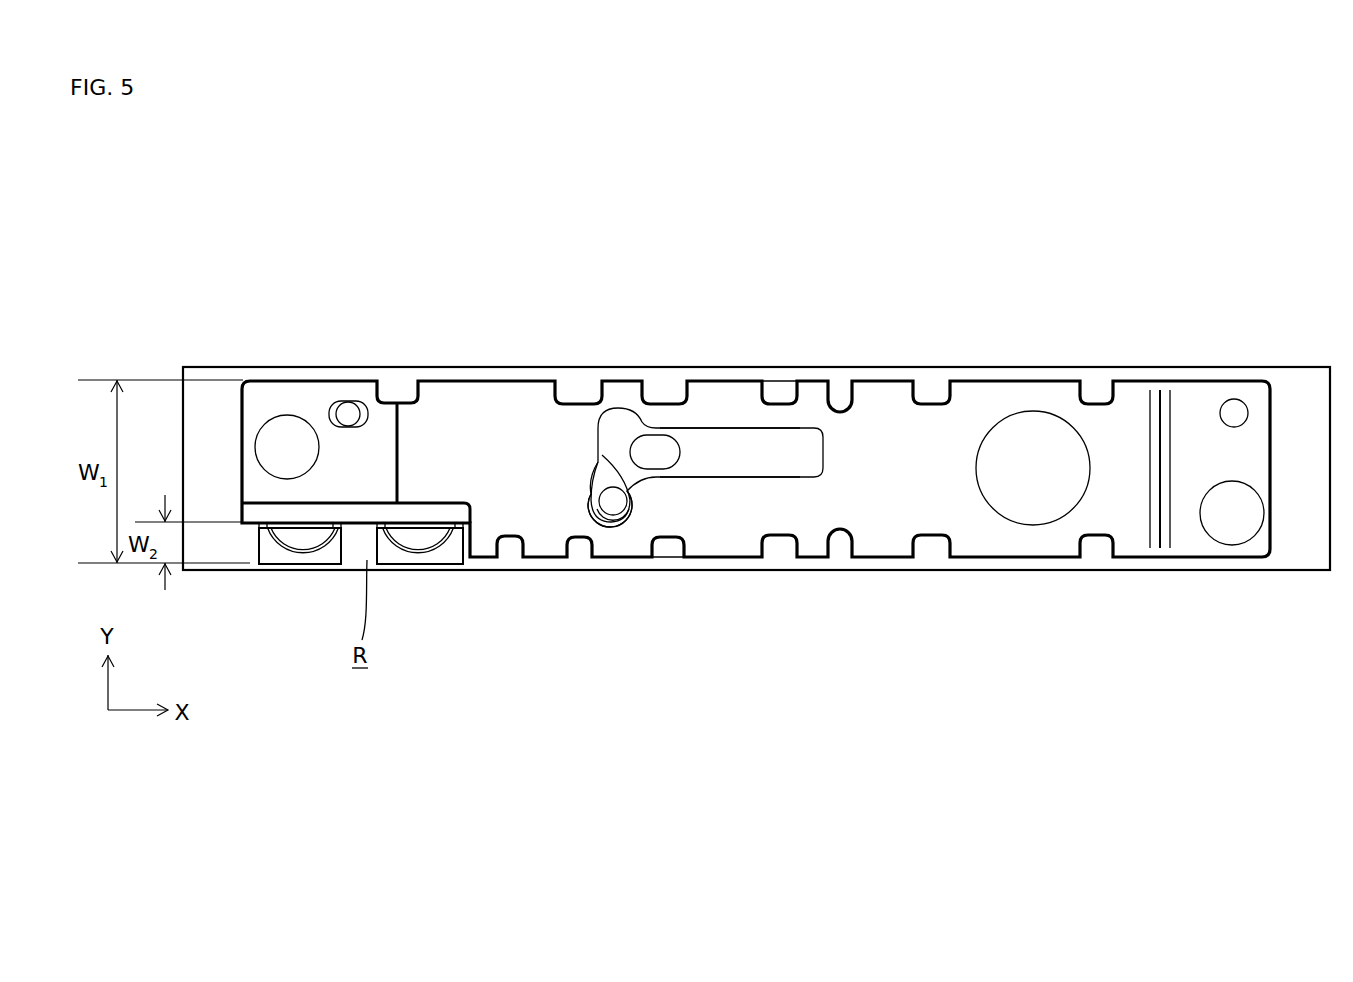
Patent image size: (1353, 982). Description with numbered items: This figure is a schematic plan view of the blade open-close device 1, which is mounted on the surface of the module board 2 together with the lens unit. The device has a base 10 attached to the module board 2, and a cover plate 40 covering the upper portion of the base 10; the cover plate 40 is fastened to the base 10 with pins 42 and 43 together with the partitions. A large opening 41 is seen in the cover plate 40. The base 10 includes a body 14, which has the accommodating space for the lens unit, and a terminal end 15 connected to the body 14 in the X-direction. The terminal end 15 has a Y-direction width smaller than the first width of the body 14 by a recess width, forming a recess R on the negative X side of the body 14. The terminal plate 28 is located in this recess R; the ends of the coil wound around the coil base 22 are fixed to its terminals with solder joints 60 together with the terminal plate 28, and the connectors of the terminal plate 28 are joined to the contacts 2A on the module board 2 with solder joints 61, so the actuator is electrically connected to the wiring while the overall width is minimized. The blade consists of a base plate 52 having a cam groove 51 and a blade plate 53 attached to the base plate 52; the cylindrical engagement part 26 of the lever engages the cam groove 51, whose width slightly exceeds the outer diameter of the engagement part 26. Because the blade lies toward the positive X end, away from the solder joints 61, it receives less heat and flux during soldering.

The blade open-close device 1 is at (1182, 309).
The module board 2 is at (880, 560).
The contacts 2A is at (325, 560).
The base 10 is at (670, 557).
The body 14 is at (780, 380).
The terminal end 15 is at (333, 380).
The coil base 22 is at (469, 522).
The engagement part 26 is at (614, 508).
The terminal plate 28 is at (362, 527).
The cover plate 40 is at (882, 408).
The large hole 41 is at (1019, 481).
The pin 42 is at (287, 427).
The pin 43 is at (1233, 530).
The cam groove 51 is at (603, 483).
The base plate 52 is at (593, 513).
The blade plate 53 is at (733, 443).
The solder joints 60 is at (303, 548).
The solder joints 61 is at (275, 553).